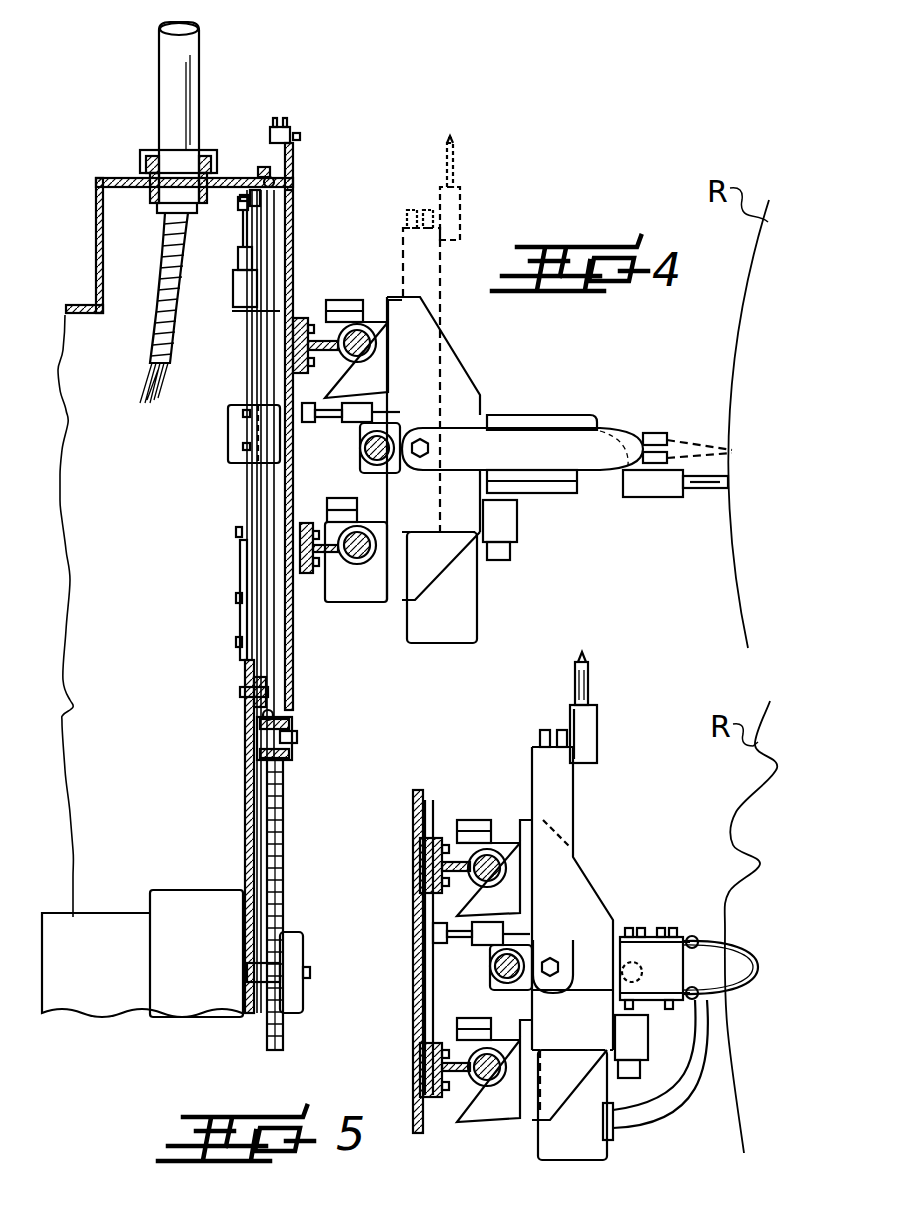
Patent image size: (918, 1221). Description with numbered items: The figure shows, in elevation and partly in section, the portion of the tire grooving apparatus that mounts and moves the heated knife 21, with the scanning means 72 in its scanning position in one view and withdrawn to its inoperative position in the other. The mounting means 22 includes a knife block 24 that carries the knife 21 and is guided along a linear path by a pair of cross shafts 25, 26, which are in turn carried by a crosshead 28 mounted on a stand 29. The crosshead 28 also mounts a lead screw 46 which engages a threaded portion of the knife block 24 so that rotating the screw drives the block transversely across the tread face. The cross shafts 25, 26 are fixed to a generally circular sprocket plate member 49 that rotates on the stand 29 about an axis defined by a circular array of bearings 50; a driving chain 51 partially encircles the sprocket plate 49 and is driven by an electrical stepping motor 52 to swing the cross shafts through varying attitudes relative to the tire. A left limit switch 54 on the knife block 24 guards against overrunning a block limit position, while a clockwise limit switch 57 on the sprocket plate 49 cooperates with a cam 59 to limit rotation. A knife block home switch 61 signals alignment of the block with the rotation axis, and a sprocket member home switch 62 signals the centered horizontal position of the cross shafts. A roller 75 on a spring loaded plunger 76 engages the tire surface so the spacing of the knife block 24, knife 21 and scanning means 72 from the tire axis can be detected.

In FIG. 4, the heated knife 21 is at (606, 340).
In FIG. 5, the heated knife 21 is at (667, 888).
In FIG. 4, the means for mounting the knife means 22 is at (338, 165).
In FIG. 4, the knife block 24 is at (455, 368).
In FIG. 5, the knife block 24 is at (588, 888).
In FIG. 4, the cross shaft 25 is at (357, 338).
In FIG. 5, the cross shaft 25 is at (487, 848).
In FIG. 4, the cross shaft 26 is at (357, 568).
In FIG. 5, the cross shaft 26 is at (487, 1088).
In FIG. 4, the crosshead 28 is at (300, 298).
In FIG. 5, the crosshead 28 is at (424, 822).
In FIG. 4, the stand 29 is at (73, 266).
In FIG. 4, the lead screw 46 is at (370, 462).
In FIG. 5, the lead screw 46 is at (496, 978).
In FIG. 4, the sprocket plate member 49 is at (293, 190).
In FIG. 5, the sprocket plate member 49 is at (413, 880).
In FIG. 4, the circular array of bearings 50 is at (281, 710).
In FIG. 4, the driving chain 51 is at (283, 826).
In FIG. 4, the electrical stepping motor 52 is at (93, 915).
In FIG. 4, the left limit switch 54 is at (507, 527).
In FIG. 5, the left limit switch 54 is at (668, 1050).
In FIG. 4, the clockwise limit switch 57 is at (228, 436).
In FIG. 4, the cam 59 is at (240, 578).
In FIG. 4, the knife block home switch 61 is at (356, 423).
In FIG. 5, the knife block home switch 61 is at (485, 940).
In FIG. 4, the sprocket member home switch 62 is at (240, 305).
In FIG. 4, the scanning means 72 is at (470, 188).
In FIG. 5, the scanning means 72 is at (635, 712).
In FIG. 4, the roller 75 is at (450, 140).
In FIG. 5, the roller 75 is at (582, 668).
In FIG. 5, the spring loaded plunger 76 is at (575, 702).